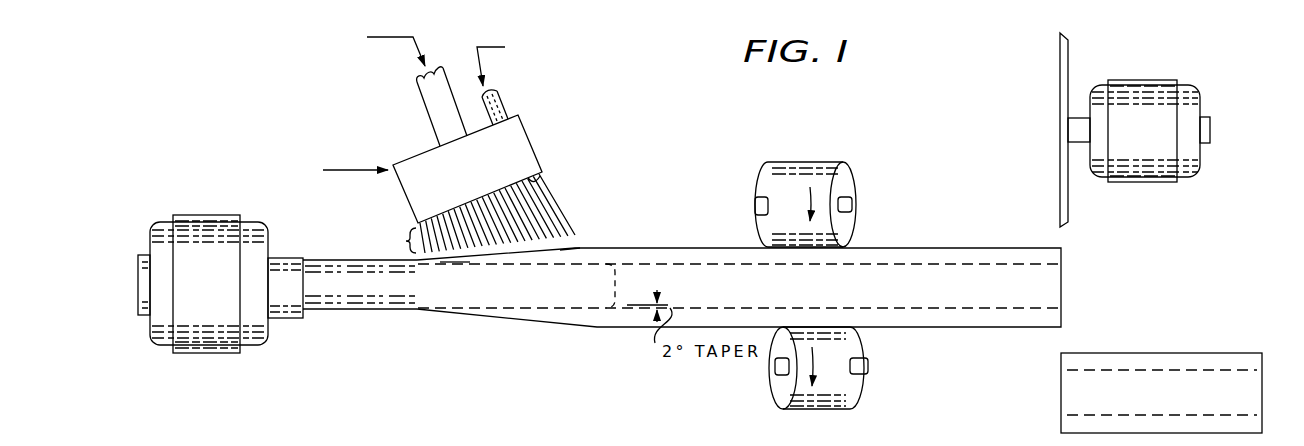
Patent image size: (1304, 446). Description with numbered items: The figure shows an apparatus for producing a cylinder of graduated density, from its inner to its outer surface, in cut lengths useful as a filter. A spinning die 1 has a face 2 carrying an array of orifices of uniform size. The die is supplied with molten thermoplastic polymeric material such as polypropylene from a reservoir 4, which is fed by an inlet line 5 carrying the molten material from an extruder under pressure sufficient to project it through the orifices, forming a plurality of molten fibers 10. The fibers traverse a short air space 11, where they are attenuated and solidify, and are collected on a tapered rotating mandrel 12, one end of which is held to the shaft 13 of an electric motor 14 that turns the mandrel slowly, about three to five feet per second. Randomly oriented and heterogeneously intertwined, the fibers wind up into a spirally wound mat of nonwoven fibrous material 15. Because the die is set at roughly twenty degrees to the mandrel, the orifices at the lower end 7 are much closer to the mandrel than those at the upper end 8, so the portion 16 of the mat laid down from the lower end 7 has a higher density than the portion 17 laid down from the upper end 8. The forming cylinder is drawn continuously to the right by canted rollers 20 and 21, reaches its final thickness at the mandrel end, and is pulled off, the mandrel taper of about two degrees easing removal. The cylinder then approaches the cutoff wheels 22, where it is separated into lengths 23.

The spinning die 1 is at (528, 137).
The face 2 is at (531, 183).
The reservoir 4 is at (297, 51).
The inlet line 5 is at (430, 91).
The lower end 7 is at (409, 221).
The upper end 8 is at (549, 152).
The molten fibers 10 is at (575, 212).
The air space 11 is at (399, 240).
The tapered rotating mandrel 12 is at (339, 273).
The shaft 13 is at (289, 316).
The electric motor 14 is at (207, 334).
The nonwoven fibrous material 15 is at (582, 323).
The portion of the nonwoven fibrous mat 16 is at (463, 264).
The portion of the mat 17 is at (568, 253).
The canted roller 20 is at (847, 175).
The canted roller 21 is at (783, 400).
The cutoff wheels 22 is at (1060, 185).
The lengths 23 is at (1157, 366).